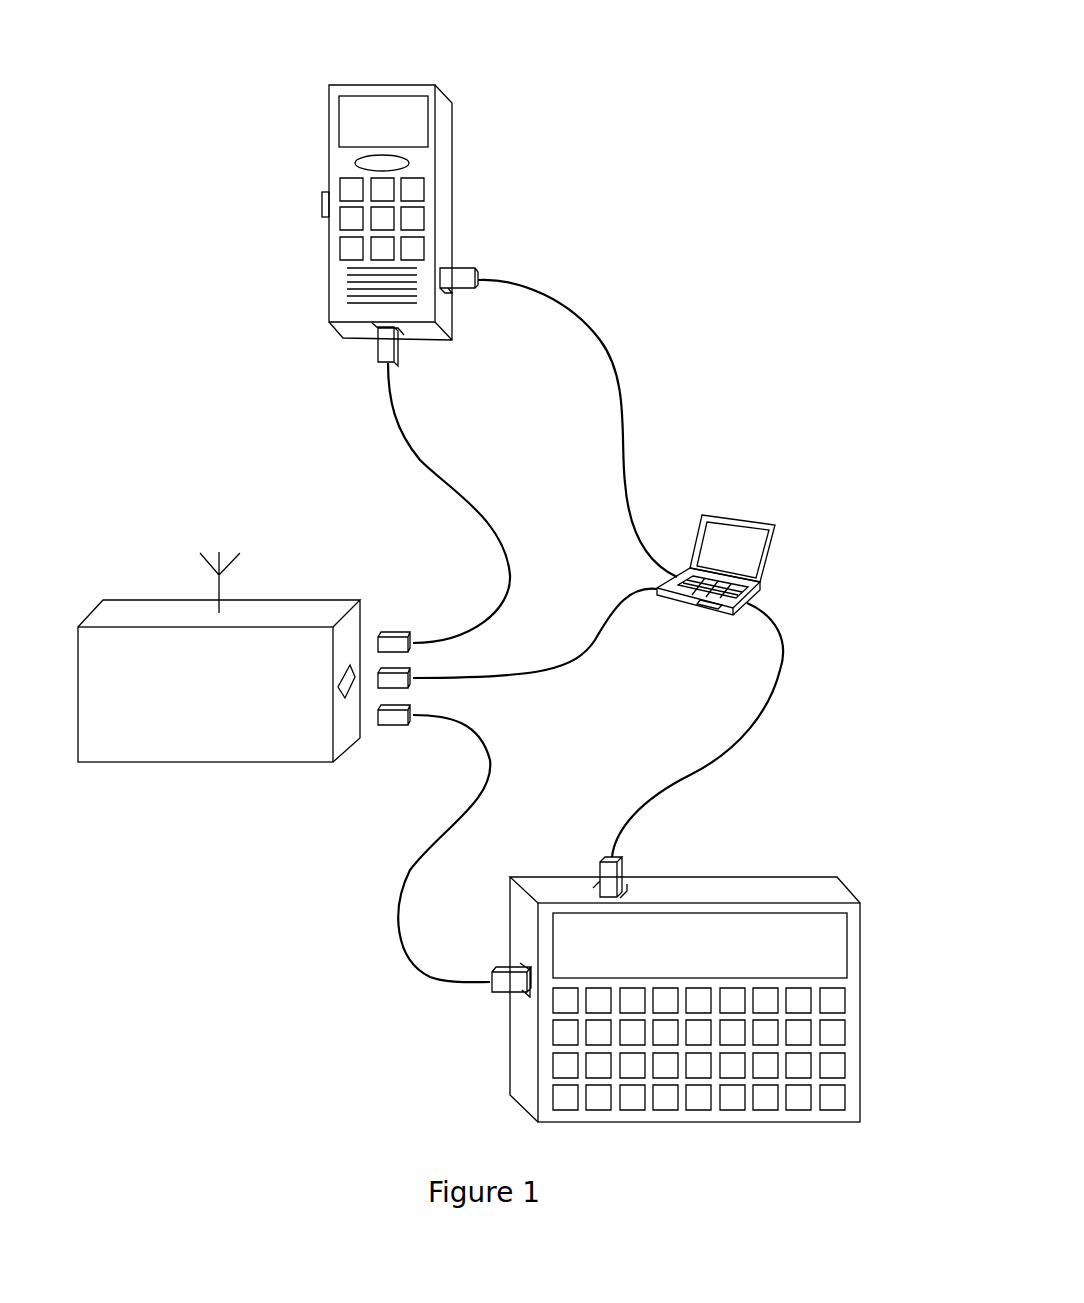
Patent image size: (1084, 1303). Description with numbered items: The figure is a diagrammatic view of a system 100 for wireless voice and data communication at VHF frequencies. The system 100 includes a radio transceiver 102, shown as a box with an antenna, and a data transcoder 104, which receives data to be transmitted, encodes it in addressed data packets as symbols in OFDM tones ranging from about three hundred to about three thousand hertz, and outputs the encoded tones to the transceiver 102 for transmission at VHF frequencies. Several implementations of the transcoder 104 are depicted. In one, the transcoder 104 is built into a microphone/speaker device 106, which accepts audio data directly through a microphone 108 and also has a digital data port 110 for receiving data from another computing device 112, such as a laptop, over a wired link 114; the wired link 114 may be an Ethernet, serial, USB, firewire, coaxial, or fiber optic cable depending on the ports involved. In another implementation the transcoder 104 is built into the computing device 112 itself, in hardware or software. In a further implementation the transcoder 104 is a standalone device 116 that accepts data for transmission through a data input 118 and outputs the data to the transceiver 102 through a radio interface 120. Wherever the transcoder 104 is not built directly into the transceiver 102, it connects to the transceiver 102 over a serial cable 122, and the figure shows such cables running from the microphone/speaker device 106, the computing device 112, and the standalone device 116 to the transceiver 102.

The system 100 is at (776, 152).
The radio transceiver 102 is at (180, 762).
The data transcoder 104 is at (570, 603).
The microphone/speaker device 106 is at (339, 125).
The microphone 108 is at (350, 280).
The digital data port 110 is at (450, 291).
The computing device 112 is at (727, 520).
The wired link 114 is at (618, 373).
The standalone device 116 is at (510, 1050).
The data input 118 is at (597, 887).
The radio interface 120 is at (517, 967).
The RS-232 cable 122 is at (465, 507).